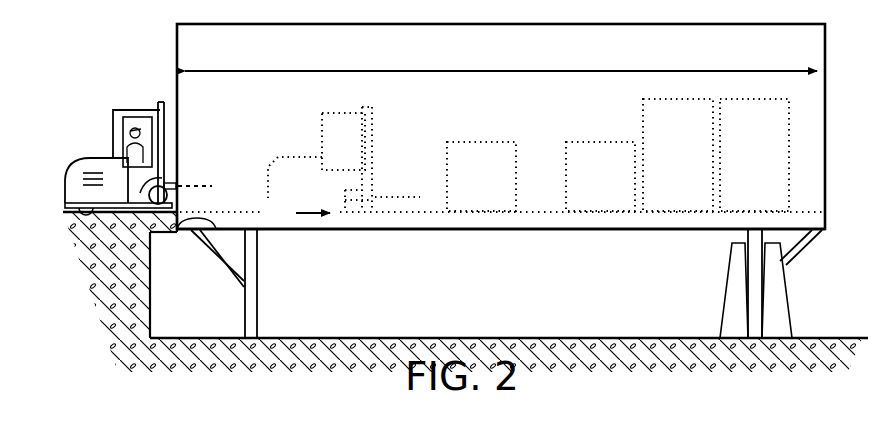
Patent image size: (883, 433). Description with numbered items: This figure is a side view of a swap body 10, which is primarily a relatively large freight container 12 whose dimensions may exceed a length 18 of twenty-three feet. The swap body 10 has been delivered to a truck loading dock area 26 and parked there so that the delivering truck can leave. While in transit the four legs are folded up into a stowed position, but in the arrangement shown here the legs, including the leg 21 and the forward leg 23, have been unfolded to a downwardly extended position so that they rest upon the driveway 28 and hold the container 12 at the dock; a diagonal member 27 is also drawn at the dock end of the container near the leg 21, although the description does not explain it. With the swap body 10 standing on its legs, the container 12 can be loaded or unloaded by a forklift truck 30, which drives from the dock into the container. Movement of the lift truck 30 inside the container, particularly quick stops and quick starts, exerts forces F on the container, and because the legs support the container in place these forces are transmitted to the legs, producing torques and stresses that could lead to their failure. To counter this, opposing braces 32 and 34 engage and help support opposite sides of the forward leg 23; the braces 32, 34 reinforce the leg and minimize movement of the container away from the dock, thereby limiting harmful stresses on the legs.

The swap body 10 is at (842, 138).
The freight container 12 is at (405, 232).
The length 18 is at (504, 76).
The leg 21 is at (258, 317).
The forward leg 23 is at (748, 303).
The truck loading dock area 26 is at (52, 200).
The diagonal brace 27 is at (198, 248).
The driveway 28 is at (336, 337).
The forklift truck 30 is at (103, 167).
The brace 32 is at (726, 296).
The brace 34 is at (790, 316).